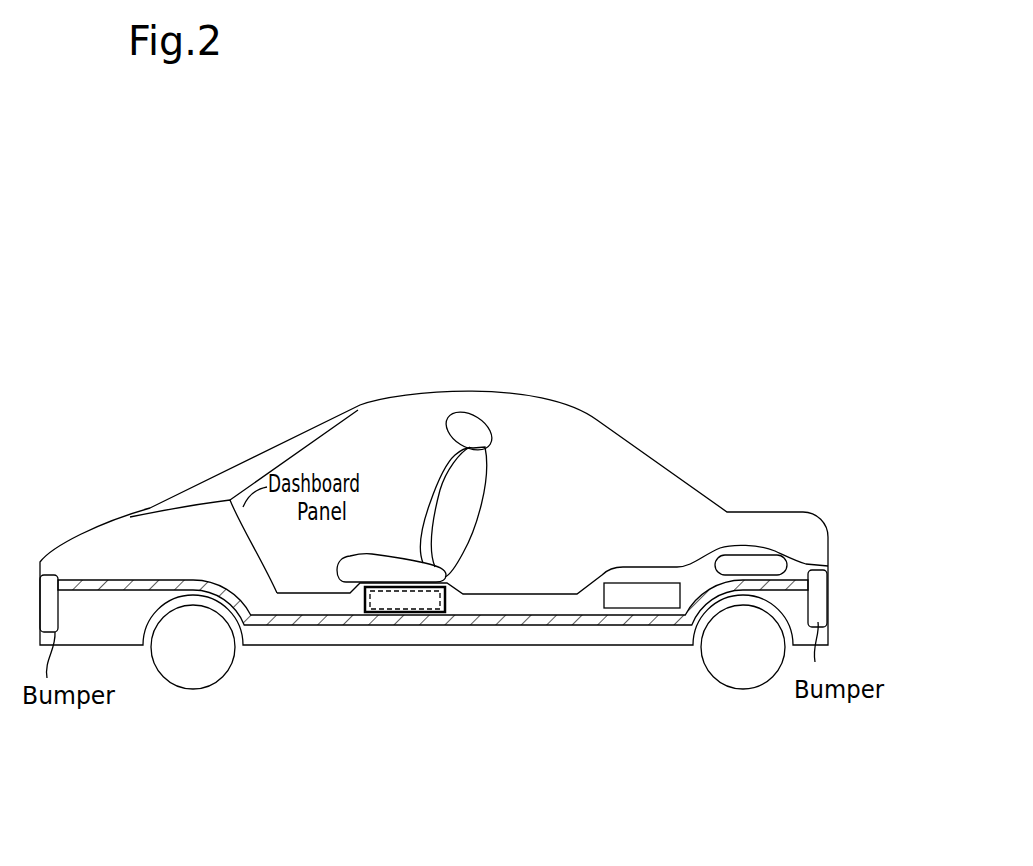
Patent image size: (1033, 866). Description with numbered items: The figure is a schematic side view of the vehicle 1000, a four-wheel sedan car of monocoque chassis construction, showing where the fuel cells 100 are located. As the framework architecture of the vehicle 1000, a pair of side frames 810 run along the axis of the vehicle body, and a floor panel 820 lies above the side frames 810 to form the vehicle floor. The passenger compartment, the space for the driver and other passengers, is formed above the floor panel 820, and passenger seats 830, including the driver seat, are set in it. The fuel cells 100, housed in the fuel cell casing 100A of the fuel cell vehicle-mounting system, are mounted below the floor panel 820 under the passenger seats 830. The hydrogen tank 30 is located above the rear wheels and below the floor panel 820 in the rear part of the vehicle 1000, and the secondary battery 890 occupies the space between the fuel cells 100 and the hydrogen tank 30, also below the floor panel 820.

The vehicle 1000 is at (180, 312).
The passenger seats 830 is at (363, 552).
The floor panel 820 is at (548, 593).
The hydrogen tank 30 is at (787, 562).
The side frames 810 is at (523, 623).
The fuel cell casing 100A is at (363, 600).
The fuel cells 100 is at (407, 625).
The secondary battery 890 is at (640, 610).